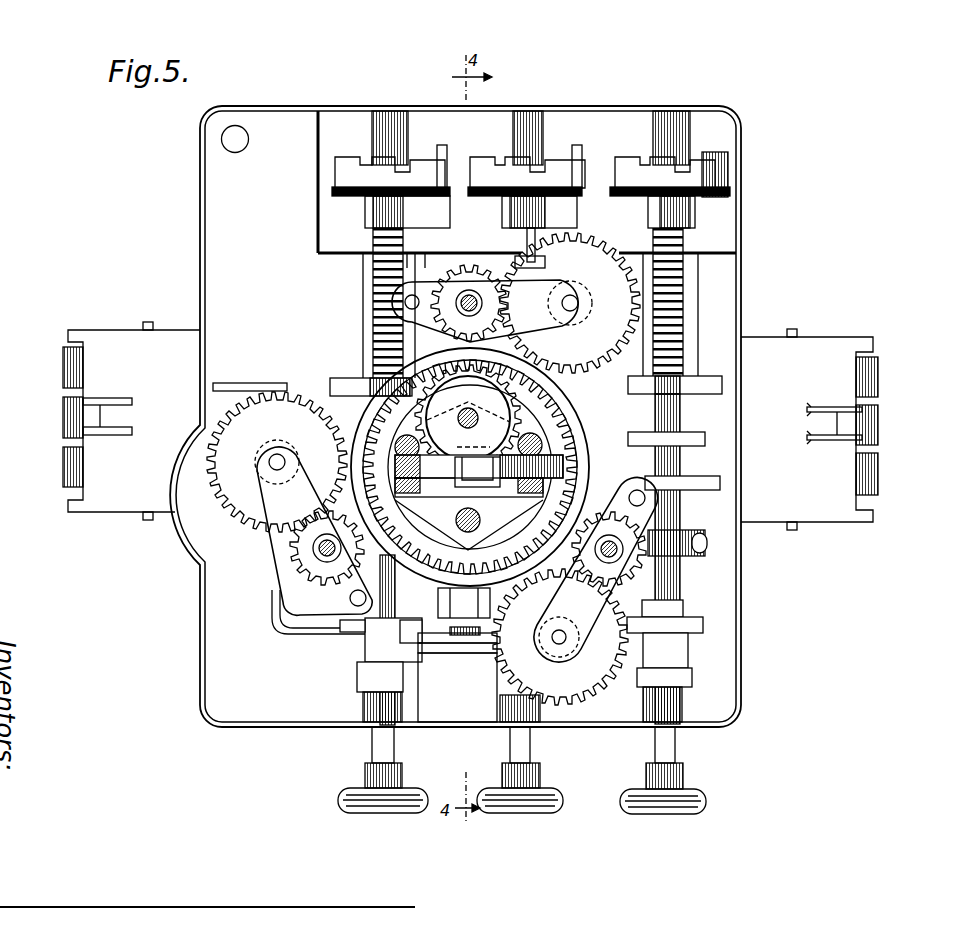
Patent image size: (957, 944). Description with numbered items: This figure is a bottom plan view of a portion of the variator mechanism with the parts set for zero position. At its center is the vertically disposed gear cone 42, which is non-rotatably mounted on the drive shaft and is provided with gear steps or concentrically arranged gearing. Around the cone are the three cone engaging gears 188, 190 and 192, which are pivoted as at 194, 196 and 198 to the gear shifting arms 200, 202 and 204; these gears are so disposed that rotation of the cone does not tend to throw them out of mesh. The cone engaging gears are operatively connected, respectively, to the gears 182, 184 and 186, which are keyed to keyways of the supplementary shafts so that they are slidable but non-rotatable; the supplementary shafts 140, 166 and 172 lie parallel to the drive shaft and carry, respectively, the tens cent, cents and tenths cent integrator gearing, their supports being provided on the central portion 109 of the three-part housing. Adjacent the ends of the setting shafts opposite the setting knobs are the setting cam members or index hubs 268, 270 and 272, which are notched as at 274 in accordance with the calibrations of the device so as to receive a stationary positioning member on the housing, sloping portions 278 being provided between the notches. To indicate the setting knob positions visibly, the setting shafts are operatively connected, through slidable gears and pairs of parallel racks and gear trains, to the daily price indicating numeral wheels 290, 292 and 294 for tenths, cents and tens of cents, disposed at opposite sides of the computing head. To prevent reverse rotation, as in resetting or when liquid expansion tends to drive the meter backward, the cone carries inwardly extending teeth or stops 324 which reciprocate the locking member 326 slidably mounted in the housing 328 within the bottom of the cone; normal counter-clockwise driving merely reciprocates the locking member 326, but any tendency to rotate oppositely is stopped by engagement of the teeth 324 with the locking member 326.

The central portion of the housing 109 is at (740, 705).
The supplementary shaft 140 is at (684, 537).
The supplementary shaft 166 is at (469, 296).
The tenths cent supplementary shaft 172 is at (320, 551).
The gear 182 is at (262, 560).
The gear 184 is at (455, 275).
The gear 186 is at (645, 577).
The cone engaging gear 188 is at (228, 507).
The cone engaging gear 190 is at (594, 238).
The cone engaging gear 192 is at (574, 702).
The pivot 194 is at (272, 458).
The pivot 196 is at (576, 303).
The pivot 198 is at (559, 641).
The gear shifting arm 200 is at (283, 504).
The gear shifting arm 202 is at (495, 313).
The gear shifting arm 204 is at (596, 573).
The setting cam member 268 is at (412, 160).
The setting cam member 270 is at (505, 234).
The setting cam member 272 is at (727, 188).
The notch 274 is at (352, 178).
The sloping portion 278 is at (382, 168).
The numeral wheel 290 is at (63, 368).
The numeral wheel 292 is at (63, 413).
The numeral wheel 294 is at (63, 451).
The tooth 324 is at (562, 424).
The locking member 326 is at (567, 460).
The housing 328 is at (479, 502).
The gear cone 42 is at (588, 466).